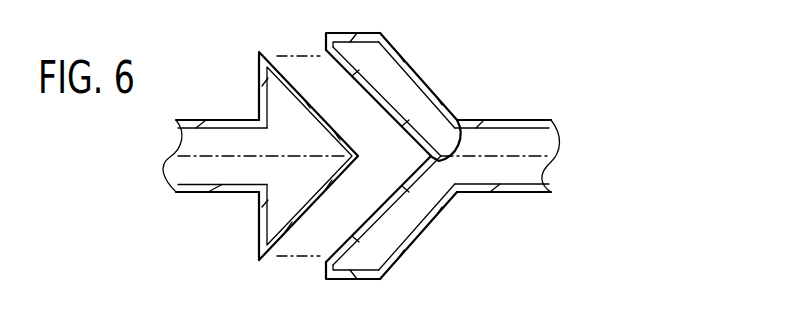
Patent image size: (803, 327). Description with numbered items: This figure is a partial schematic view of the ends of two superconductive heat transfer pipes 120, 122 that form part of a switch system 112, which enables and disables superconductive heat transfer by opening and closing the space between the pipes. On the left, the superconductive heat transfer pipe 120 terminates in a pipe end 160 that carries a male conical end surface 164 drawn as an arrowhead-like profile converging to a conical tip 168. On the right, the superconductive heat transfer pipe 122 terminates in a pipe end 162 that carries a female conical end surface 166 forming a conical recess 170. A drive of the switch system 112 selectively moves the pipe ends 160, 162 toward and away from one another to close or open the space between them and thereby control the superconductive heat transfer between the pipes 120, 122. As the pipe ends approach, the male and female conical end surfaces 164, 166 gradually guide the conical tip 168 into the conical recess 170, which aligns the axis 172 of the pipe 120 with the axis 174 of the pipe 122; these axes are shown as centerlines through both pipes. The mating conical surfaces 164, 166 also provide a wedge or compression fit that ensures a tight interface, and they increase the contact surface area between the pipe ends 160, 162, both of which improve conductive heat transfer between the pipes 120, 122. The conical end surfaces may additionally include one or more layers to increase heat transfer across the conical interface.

The switch system 112 is at (235, 282).
The superconductive heat transfer pipe 120 is at (168, 158).
The superconductive heat transfer pipe 122 is at (558, 150).
The pipe end 160 is at (240, 244).
The pipe end 162 is at (407, 256).
The male conical end surface 164 is at (296, 84).
The female conical end surface 166 is at (394, 126).
The conical tip 168 is at (358, 157).
The conical recess 170 is at (457, 118).
The axis 172 is at (219, 152).
The axis 174 is at (499, 150).